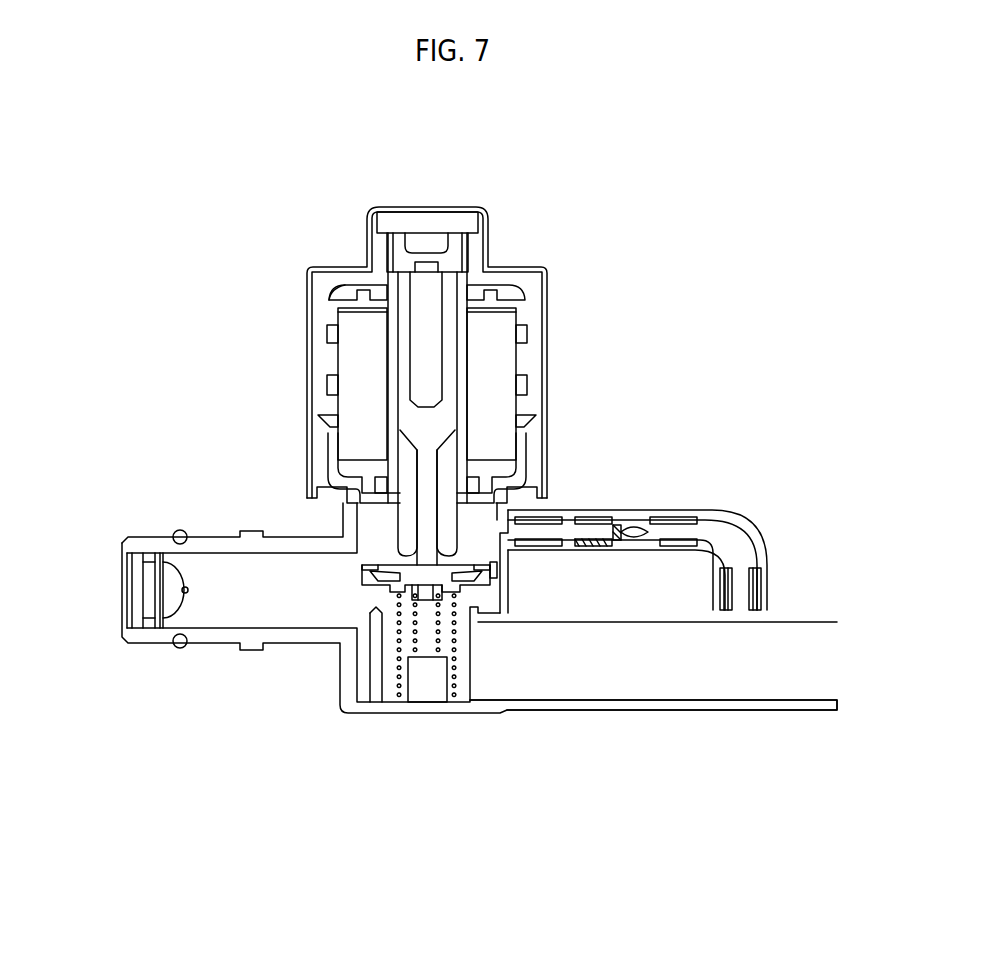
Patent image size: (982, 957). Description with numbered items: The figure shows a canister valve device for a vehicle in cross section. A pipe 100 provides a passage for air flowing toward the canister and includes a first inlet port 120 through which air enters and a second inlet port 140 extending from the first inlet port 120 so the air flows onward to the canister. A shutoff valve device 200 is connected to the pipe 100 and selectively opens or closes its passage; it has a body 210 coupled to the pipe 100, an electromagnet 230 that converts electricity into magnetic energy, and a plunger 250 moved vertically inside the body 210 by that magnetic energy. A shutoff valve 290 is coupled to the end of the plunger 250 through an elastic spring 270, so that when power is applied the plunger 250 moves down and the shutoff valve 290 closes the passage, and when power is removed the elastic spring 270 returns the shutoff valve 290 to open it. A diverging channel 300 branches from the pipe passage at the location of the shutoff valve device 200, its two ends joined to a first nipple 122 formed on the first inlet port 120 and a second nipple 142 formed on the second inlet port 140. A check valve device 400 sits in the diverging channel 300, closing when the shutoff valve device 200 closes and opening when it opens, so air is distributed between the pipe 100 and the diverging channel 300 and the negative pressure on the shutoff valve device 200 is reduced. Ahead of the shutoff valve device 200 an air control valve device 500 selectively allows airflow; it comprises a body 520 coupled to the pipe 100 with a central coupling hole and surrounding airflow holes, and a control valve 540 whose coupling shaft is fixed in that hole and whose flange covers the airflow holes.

The pipe 100 is at (436, 742).
The first inlet port 120 is at (280, 622).
The first nipple 122 is at (553, 523).
The second inlet port 140 is at (619, 700).
The second nipple 142 is at (741, 594).
The shutoff valve device 200 is at (519, 186).
The body 210 is at (537, 288).
The electromagnet 230 is at (352, 355).
The plunger 250 is at (428, 471).
The elastic spring 270 is at (402, 703).
The shutoff valve 290 is at (390, 575).
The diverging channel 300 is at (743, 530).
The check valve device 400 is at (640, 527).
The air control valve device 500 is at (110, 558).
The body 520 is at (150, 600).
The control valve 540 is at (177, 612).